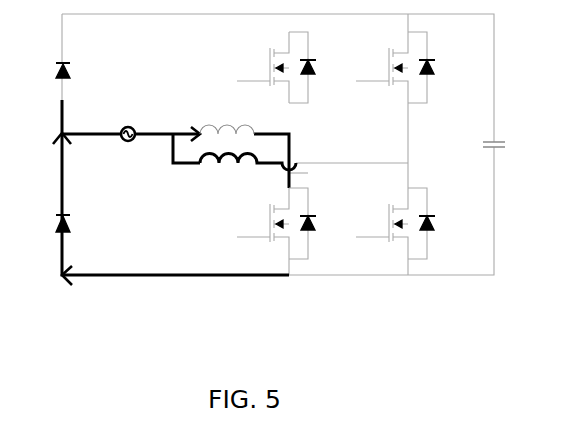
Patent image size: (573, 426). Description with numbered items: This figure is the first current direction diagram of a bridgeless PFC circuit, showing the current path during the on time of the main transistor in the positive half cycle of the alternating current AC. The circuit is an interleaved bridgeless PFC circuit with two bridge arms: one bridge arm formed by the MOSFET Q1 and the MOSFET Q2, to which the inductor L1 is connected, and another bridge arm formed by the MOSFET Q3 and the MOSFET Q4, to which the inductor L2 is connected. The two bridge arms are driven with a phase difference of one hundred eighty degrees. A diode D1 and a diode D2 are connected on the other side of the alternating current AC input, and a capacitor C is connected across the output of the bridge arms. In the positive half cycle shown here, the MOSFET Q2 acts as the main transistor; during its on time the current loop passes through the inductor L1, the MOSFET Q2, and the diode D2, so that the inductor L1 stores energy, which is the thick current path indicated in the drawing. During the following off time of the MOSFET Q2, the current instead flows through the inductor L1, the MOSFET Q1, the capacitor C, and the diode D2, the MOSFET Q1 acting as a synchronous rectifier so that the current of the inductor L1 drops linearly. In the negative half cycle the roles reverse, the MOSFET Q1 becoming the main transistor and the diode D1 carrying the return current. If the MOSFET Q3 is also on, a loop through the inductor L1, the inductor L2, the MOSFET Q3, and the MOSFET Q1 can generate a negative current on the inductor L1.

The diode D1 is at (74, 72).
The diode D2 is at (74, 225).
The alternating current AC is at (124, 122).
The inductor L1 is at (227, 121).
The inductor L2 is at (248, 173).
The MOSFET Q1 is at (275, 67).
The MOSFET Q2 is at (275, 223).
The MOSFET Q3 is at (395, 67).
The MOSFET Q4 is at (395, 223).
The capacitor C is at (483, 147).